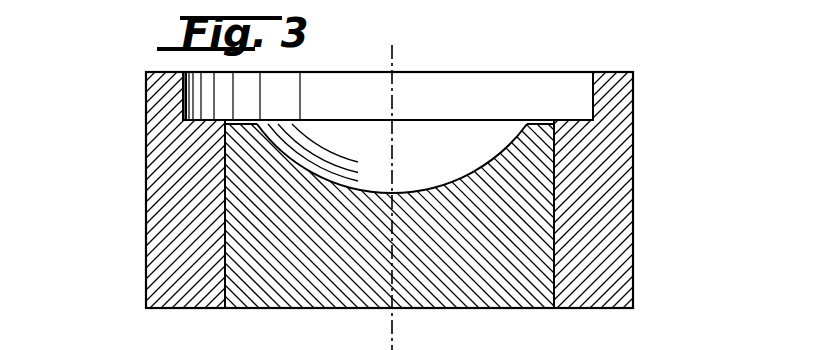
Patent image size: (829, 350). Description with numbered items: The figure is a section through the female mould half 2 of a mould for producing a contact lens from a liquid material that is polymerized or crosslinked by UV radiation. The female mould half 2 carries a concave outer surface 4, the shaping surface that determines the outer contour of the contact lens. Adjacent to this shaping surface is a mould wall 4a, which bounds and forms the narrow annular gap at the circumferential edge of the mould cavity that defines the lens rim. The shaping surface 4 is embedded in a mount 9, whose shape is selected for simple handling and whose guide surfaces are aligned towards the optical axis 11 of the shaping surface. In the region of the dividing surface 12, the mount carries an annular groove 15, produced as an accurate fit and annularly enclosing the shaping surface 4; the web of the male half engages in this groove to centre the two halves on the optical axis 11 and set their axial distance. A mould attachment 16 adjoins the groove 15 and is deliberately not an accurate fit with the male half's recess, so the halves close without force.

The female mould half 2 is at (135, 197).
The concave outer surface 4 is at (448, 182).
The mould wall 4a is at (535, 118).
The mount 9 is at (168, 267).
The optical axis 11 is at (390, 320).
The dividing surface 12 is at (618, 72).
The annular groove 15 is at (582, 97).
The mould attachment 16 is at (618, 86).